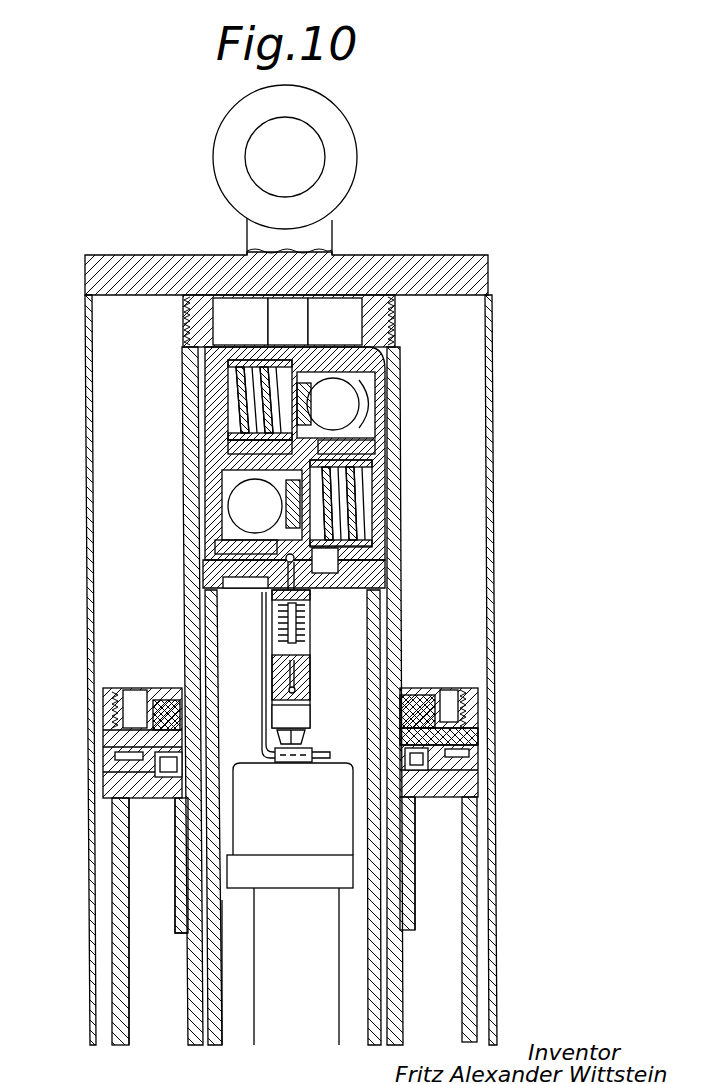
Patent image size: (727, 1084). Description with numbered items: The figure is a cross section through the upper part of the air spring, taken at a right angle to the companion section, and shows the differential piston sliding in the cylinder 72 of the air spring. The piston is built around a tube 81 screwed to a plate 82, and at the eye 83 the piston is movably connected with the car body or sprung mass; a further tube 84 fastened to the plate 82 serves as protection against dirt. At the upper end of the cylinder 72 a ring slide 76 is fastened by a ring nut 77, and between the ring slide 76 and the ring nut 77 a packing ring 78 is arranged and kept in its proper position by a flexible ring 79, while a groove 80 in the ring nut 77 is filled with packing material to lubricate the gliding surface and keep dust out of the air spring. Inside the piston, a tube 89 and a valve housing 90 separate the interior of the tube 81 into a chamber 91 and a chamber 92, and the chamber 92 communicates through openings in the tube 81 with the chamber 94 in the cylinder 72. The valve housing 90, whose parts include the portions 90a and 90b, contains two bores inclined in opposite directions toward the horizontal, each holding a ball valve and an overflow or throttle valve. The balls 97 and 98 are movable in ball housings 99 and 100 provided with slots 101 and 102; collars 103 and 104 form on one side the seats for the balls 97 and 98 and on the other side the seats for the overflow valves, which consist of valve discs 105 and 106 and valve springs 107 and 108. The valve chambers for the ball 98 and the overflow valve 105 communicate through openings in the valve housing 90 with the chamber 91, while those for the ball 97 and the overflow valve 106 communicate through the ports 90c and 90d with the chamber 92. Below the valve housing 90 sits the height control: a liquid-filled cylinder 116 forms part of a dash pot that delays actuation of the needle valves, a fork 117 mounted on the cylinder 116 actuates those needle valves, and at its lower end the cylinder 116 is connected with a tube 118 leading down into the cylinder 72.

The cylinder 72 is at (466, 975).
The ring slide 76 is at (406, 865).
The ring nut 77 is at (434, 689).
The packing ring 78 is at (445, 745).
The flexible ring 79 is at (465, 767).
The groove 80 is at (440, 712).
The tube 81 is at (394, 636).
The plate 82 is at (460, 264).
The movable connection 83 is at (357, 147).
The tube 84 is at (493, 319).
The tube 89 is at (372, 637).
The valve housing 90 is at (372, 446).
The valve body partition 90a is at (325, 453).
The valve body bottom 90b is at (333, 567).
The port 90c is at (270, 456).
The port 90d is at (196, 344).
The chamber 91 is at (235, 1012).
The chamber 92 is at (205, 975).
The chamber 94 is at (148, 935).
The ball 97 is at (240, 506).
The ball 98 is at (352, 392).
The ball housing 99 is at (224, 550).
The ball housing 100 is at (342, 393).
The slot 101 is at (284, 490).
The slot 102 is at (304, 418).
The collar 103 is at (267, 349).
The collar 104 is at (360, 537).
The valve disc 105 is at (360, 503).
The valve disc 106 is at (282, 409).
The valve spring 107 is at (357, 470).
The valve spring 108 is at (234, 376).
The liquid-filled cylinder 116 is at (236, 818).
The fork 117 is at (268, 670).
The tube 118 is at (256, 935).